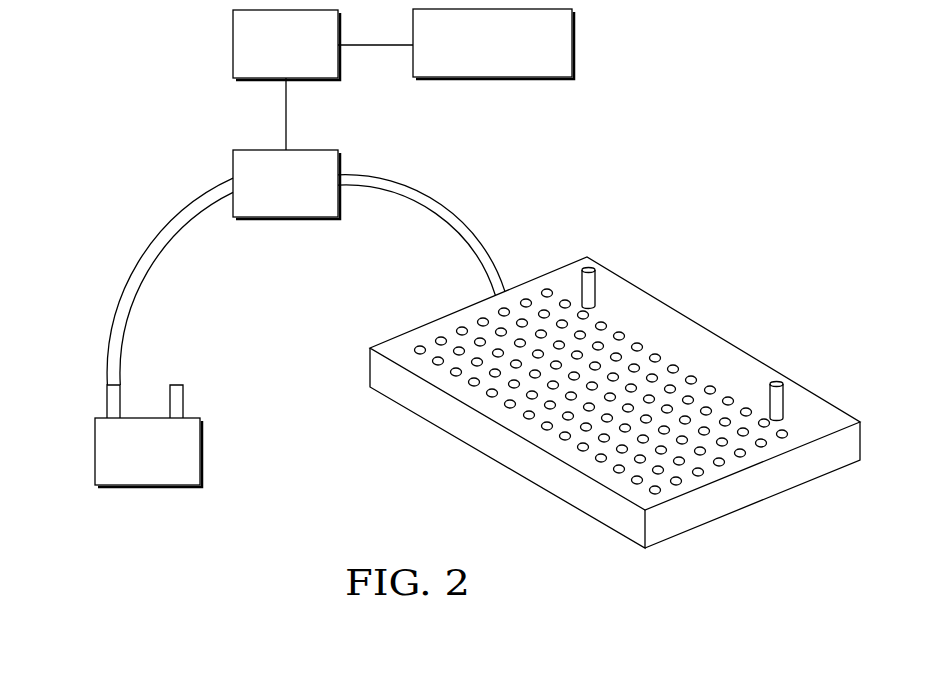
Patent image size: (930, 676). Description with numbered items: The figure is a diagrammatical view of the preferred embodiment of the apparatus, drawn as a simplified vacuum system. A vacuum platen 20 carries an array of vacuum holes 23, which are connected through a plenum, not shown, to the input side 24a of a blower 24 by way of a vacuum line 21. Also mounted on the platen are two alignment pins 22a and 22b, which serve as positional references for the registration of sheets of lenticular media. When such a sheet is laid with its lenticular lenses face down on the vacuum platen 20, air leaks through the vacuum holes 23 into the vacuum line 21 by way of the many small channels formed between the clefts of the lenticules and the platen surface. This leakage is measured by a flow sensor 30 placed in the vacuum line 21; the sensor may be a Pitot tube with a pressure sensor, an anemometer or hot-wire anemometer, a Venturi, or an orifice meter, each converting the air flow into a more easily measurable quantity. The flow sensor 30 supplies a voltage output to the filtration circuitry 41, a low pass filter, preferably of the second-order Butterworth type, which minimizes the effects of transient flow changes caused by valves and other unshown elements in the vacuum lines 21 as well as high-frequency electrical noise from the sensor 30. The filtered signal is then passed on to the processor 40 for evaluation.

The vacuum platen 20 is at (683, 528).
The vacuum line 21 is at (180, 221).
The alignment pin 22a is at (779, 378).
The alignment pin 22b is at (592, 267).
The vacuum holes 23 is at (541, 426).
The blower 24 is at (95, 455).
The input side of blower 24a is at (108, 395).
The flow sensor 30 is at (233, 152).
The processor 40 is at (573, 44).
The low pass filter 41 is at (233, 44).